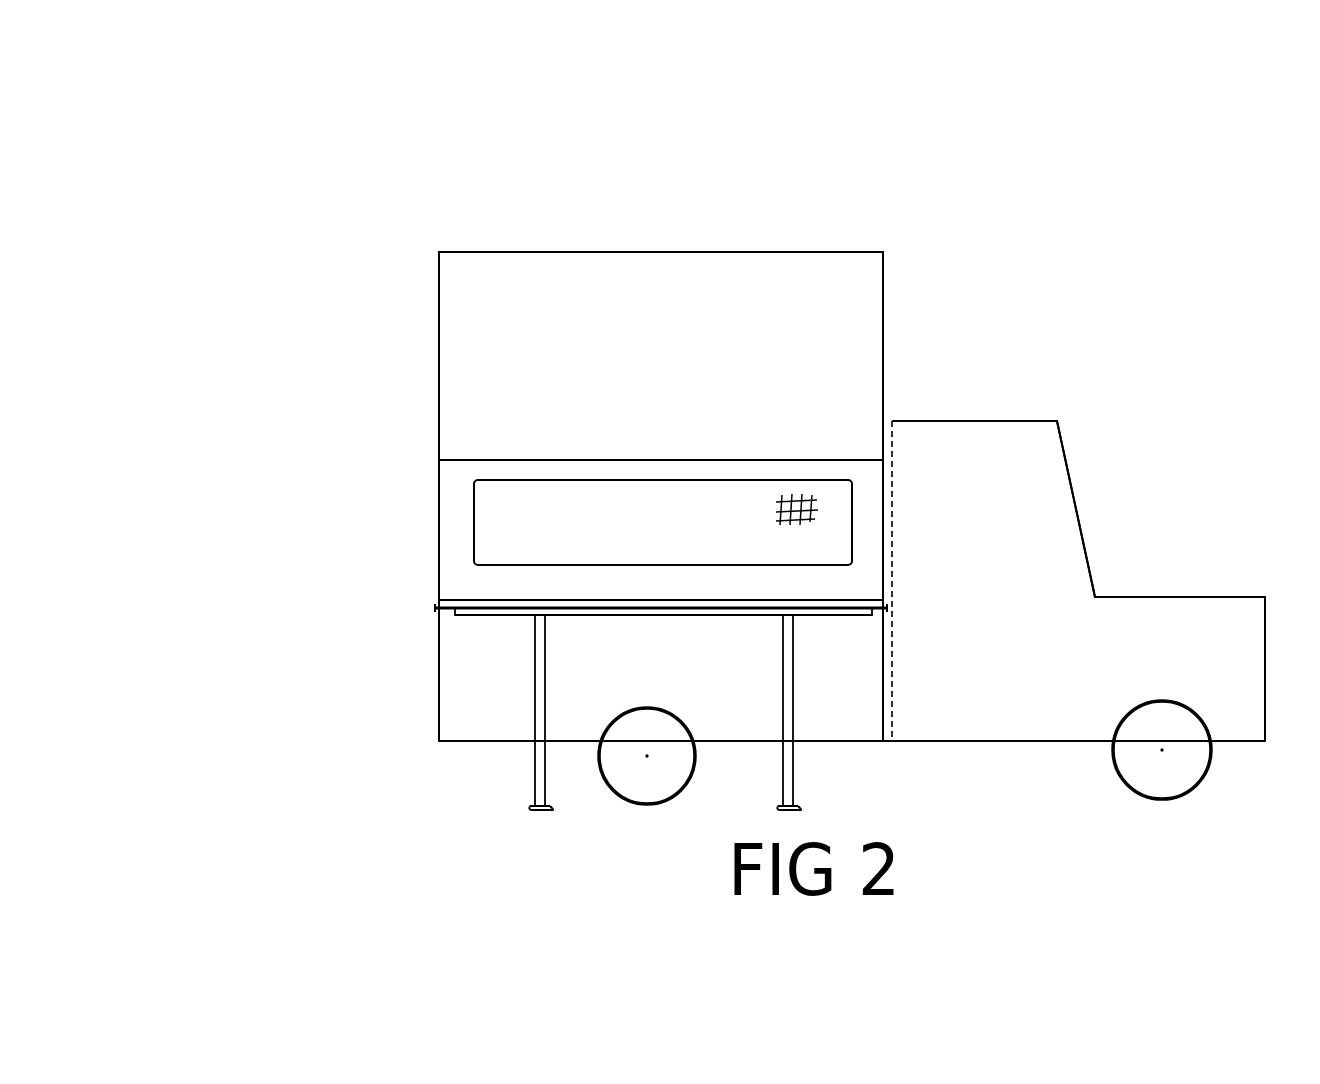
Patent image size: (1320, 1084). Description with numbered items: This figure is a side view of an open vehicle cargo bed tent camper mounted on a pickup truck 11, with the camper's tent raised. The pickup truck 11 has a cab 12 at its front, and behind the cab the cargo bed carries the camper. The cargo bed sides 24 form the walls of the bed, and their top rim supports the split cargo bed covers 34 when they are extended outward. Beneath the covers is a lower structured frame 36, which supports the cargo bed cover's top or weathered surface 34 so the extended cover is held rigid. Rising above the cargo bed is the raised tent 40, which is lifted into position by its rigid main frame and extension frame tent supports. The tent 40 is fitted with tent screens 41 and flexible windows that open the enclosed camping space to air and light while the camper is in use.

The pickup truck 11 is at (1177, 588).
The cab 12 is at (978, 405).
The cargo bed sides 24 is at (470, 683).
The split cargo bed covers 34 is at (433, 602).
The lower structured frame 36 is at (455, 613).
The tent 40 is at (690, 240).
The tent screens 41 is at (798, 473).